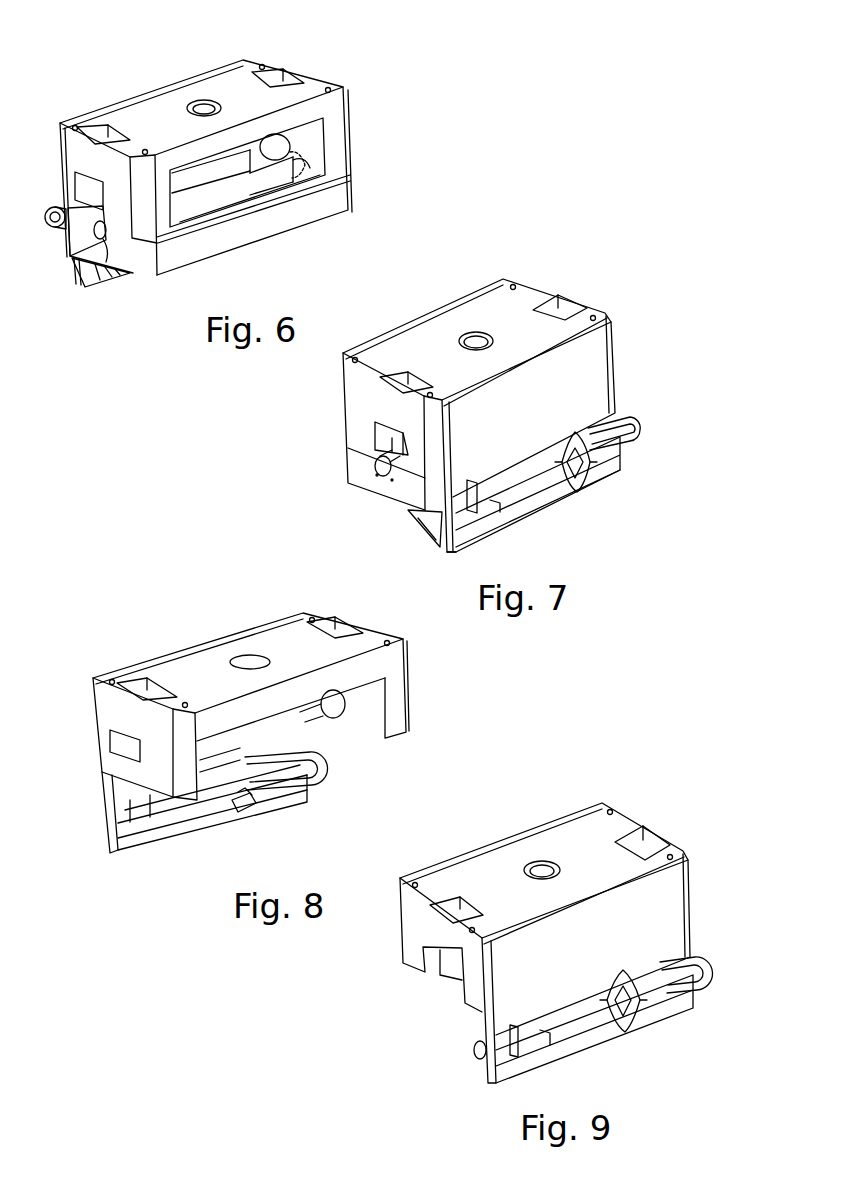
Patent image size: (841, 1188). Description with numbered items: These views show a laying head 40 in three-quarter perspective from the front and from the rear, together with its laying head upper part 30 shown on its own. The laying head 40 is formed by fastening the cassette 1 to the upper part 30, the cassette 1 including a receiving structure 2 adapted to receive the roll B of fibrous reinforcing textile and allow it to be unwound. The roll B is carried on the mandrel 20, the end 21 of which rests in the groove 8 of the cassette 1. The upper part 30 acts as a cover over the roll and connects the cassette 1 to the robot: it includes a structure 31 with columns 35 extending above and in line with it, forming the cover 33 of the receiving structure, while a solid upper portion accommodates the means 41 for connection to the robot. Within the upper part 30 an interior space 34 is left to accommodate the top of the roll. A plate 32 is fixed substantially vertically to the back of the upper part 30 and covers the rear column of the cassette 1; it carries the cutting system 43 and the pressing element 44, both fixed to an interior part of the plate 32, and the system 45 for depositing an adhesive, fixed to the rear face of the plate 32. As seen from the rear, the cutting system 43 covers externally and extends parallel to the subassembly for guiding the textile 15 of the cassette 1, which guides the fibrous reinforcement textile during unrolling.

In FIG. 6, the cassette 1 is at (363, 203).
In FIG. 7, the receiving structure 2 is at (370, 474).
In FIG. 6, the groove 8 is at (104, 241).
In FIG. 7, the textile guide subassembly 15 is at (453, 551).
In FIG. 6, the mandrel 20 is at (95, 235).
In FIG. 6, the end of the mandrel 21 is at (105, 245).
In FIG. 6, the laying head upper part 30 is at (350, 87).
In FIG. 8, the laying head upper part 30 is at (415, 672).
In FIG. 8, the structure 31 is at (187, 672).
In FIG. 7, the plate 32 is at (597, 375).
In FIG. 8, the plate 32 is at (107, 825).
In FIG. 9, the plate 32 is at (665, 913).
In FIG. 6, the cover 33 is at (225, 97).
In FIG. 8, the cover 33 is at (300, 648).
In FIG. 6, the interior space 34 is at (250, 170).
In FIG. 8, the interior space 34 is at (335, 730).
In FIG. 6, the columns 35 is at (120, 217).
In FIG. 8, the columns 35 is at (393, 718).
In FIG. 6, the laying head 40 is at (378, 114).
In FIG. 7, the connection means 41 is at (475, 332).
In FIG. 8, the connection means 41 is at (250, 657).
In FIG. 9, the connection means 41 is at (542, 863).
In FIG. 8, the cutting system 43 is at (247, 812).
In FIG. 8, the pressing element 44 is at (227, 827).
In FIG. 7, the adhesive depositing system 45 is at (577, 494).
In FIG. 9, the adhesive depositing system 45 is at (630, 1032).
In FIG. 6, the roll B is at (340, 165).